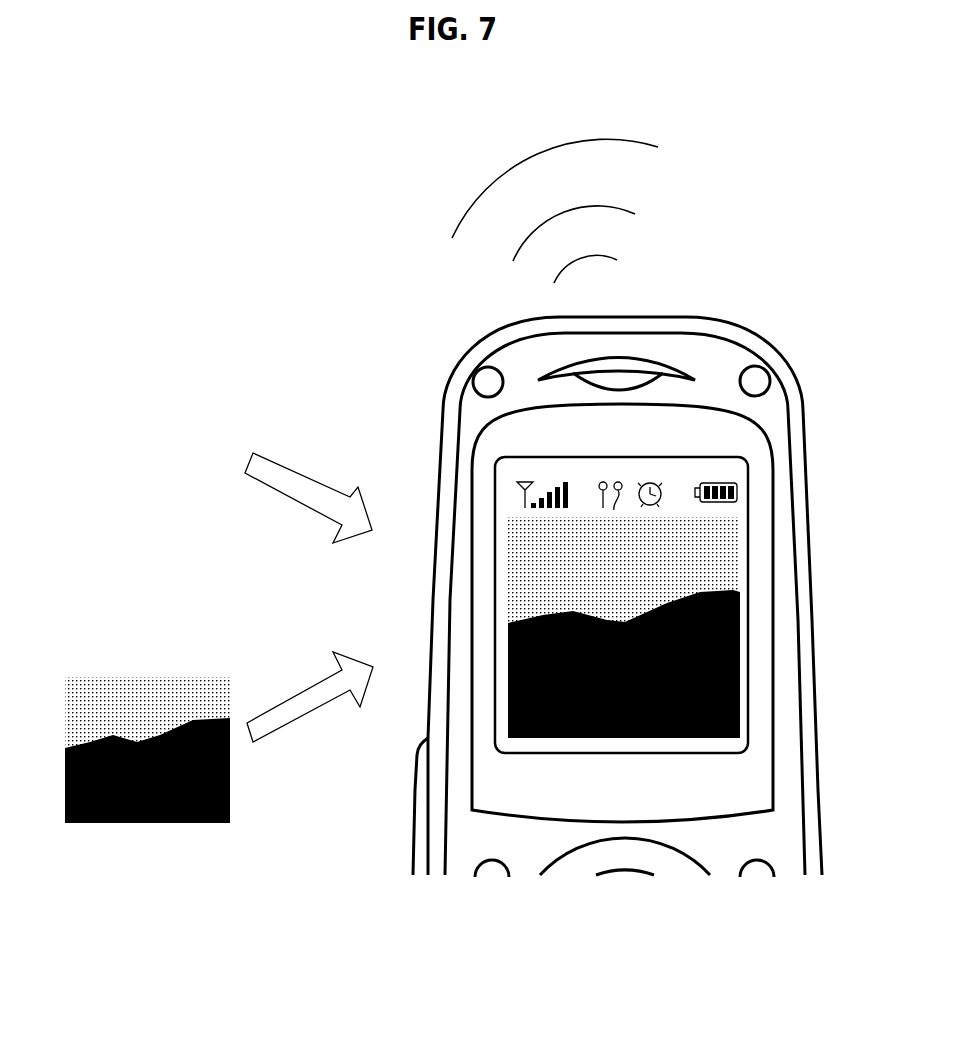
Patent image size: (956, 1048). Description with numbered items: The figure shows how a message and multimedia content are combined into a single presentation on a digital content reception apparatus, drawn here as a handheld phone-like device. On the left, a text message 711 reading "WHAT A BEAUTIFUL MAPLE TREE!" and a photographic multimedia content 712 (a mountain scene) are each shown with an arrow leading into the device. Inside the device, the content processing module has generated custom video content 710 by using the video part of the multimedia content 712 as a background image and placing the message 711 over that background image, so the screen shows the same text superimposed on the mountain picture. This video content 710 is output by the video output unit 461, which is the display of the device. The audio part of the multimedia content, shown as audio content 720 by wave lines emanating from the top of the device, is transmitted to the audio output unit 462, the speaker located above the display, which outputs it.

The video output unit 461 is at (713, 455).
The audio output unit 462 is at (642, 372).
The video content 710 is at (740, 617).
The message 711 is at (133, 410).
The multimedia content 712 is at (143, 825).
The audio content 720 is at (635, 132).